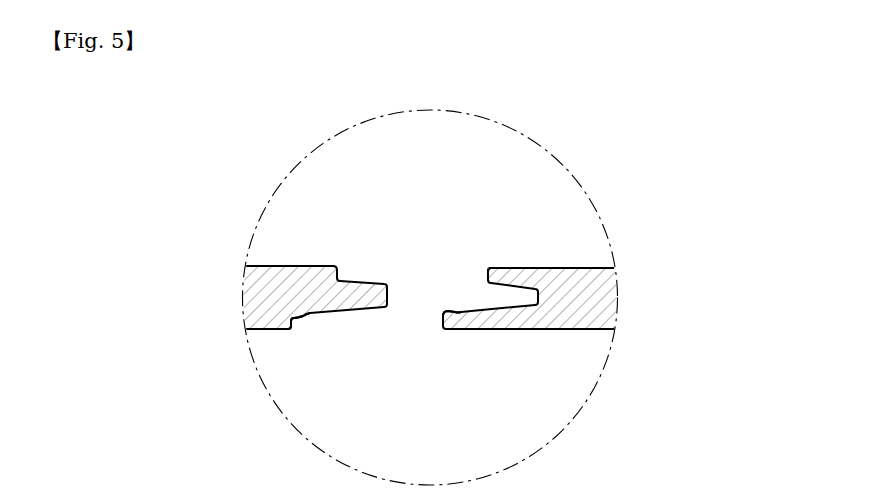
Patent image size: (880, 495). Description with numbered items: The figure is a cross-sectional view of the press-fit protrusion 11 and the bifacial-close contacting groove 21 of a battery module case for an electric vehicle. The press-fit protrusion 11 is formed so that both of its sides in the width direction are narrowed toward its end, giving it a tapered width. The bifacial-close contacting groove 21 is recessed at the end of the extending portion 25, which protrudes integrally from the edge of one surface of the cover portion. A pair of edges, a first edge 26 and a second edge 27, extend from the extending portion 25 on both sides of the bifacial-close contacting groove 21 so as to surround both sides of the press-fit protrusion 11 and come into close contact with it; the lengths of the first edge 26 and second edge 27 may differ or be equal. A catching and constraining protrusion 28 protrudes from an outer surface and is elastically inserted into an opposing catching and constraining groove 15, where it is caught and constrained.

The press-fit protrusion 11 is at (287, 278).
The catching and constraining groove 15 is at (290, 317).
The bifacial-close contacting groove 21 is at (543, 291).
The extending portion 25 is at (588, 317).
The first edge 26 is at (500, 275).
The second edge 27 is at (490, 323).
The catching and constraining protrusion 28 is at (447, 311).